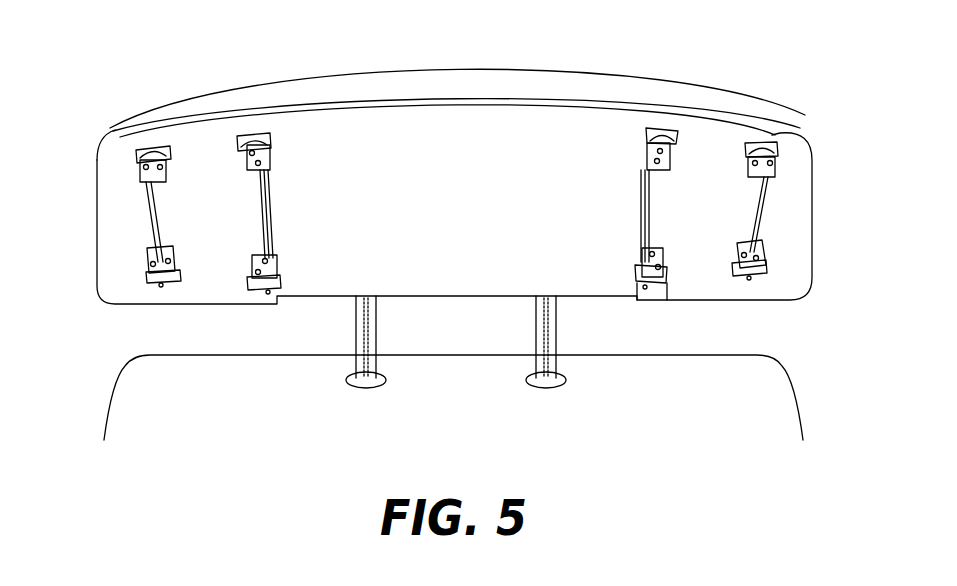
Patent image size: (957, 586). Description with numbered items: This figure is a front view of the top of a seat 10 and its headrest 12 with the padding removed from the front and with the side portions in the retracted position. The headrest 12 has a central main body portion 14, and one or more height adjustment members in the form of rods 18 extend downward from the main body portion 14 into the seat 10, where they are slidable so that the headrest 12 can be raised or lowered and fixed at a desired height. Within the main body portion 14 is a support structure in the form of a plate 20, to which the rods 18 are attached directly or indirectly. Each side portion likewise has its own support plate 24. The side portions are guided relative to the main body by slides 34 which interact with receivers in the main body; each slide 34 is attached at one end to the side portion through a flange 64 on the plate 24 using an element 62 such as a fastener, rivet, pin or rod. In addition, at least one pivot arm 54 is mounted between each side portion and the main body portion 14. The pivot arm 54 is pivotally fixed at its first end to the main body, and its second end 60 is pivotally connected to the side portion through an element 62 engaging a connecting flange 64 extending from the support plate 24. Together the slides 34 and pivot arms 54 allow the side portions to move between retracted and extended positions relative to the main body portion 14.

The seat 10 is at (827, 407).
The headrest 12 is at (824, 201).
The main body portion 14 is at (433, 78).
The rods 18 is at (369, 325).
The plate 20 is at (540, 105).
The plate 24 is at (212, 128).
The slide 34 is at (160, 148).
The pivot arm 54 is at (252, 135).
The second end 60 is at (272, 134).
The element 62 is at (135, 145).
The flange 64 is at (140, 162).